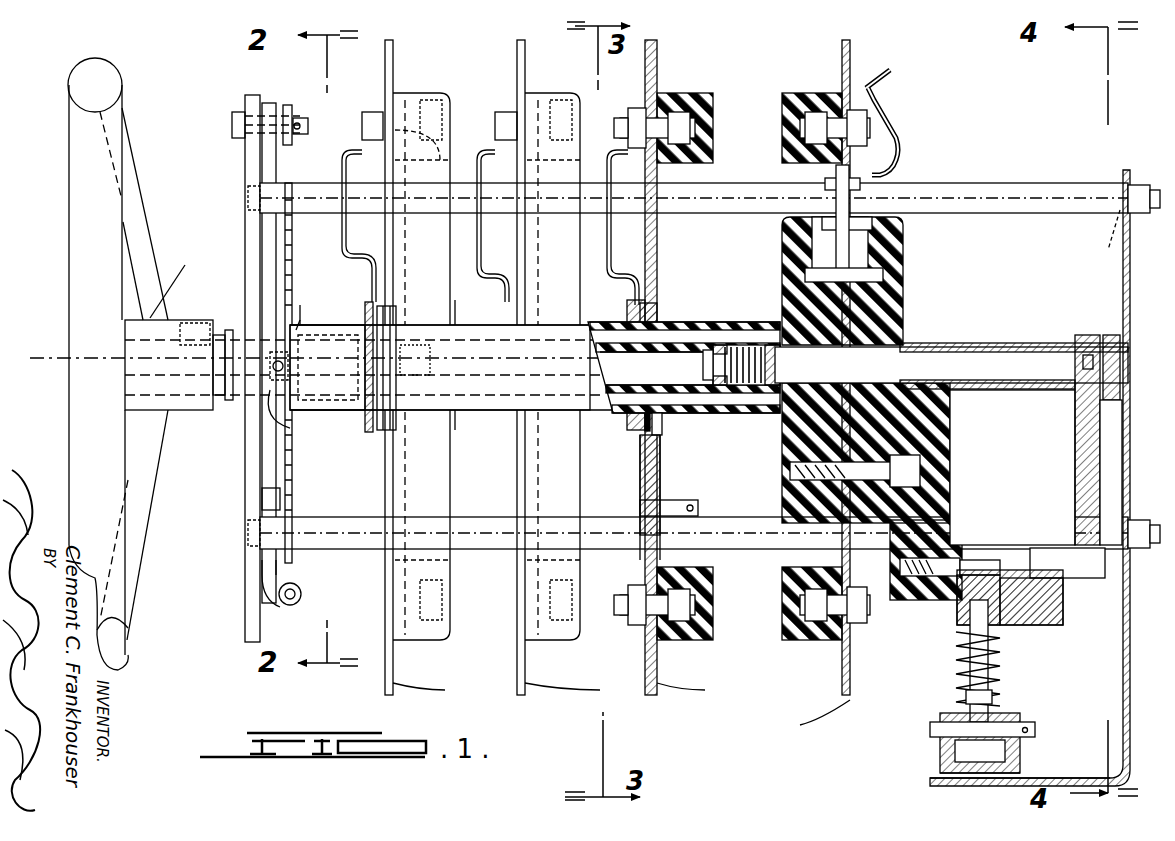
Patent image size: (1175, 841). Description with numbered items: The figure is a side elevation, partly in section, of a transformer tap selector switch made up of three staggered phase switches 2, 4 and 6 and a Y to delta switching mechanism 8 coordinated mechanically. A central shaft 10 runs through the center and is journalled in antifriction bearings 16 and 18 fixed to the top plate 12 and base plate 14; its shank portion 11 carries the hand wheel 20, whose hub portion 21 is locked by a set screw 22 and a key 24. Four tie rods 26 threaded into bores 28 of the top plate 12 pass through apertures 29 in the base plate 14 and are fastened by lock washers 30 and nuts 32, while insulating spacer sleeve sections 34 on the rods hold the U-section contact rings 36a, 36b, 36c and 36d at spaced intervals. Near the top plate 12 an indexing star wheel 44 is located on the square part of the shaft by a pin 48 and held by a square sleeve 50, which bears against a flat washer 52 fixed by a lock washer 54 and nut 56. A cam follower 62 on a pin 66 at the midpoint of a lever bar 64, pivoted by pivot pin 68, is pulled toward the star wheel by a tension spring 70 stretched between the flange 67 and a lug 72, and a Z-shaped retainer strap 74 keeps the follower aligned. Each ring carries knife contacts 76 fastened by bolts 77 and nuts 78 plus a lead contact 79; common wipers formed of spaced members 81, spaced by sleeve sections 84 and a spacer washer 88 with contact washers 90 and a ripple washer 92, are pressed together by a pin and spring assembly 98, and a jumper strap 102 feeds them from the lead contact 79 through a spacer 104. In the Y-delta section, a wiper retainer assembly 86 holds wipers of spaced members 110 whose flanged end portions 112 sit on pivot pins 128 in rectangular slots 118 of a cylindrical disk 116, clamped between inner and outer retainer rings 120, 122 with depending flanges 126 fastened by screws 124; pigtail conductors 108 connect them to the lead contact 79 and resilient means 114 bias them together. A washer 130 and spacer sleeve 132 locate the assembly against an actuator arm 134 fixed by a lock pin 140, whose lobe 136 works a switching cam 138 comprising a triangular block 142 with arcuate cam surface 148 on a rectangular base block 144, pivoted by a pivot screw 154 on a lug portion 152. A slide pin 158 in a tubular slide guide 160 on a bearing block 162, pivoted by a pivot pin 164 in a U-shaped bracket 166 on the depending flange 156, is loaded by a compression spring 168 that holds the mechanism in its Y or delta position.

The phase switch 2 is at (435, 90).
The phase switch 4 is at (548, 92).
The phase switch 6 is at (700, 92).
The Y to delta switching mechanism 8 is at (812, 92).
The central shaft 10 is at (950, 346).
The shank portion 11 is at (154, 367).
The top plate 12 is at (250, 462).
The base plate 14 is at (1122, 440).
The antifriction bearing 16 is at (240, 405).
The antifriction bearing 18 is at (1122, 360).
The hand wheel 20 is at (66, 210).
The hub portion 21 is at (176, 282).
The set screw 22 is at (192, 322).
The key 24 is at (125, 420).
The tie rods 26 is at (300, 270).
The threaded bores 28 is at (248, 186).
The apertures 29 is at (1140, 520).
The lock washers 30 is at (1132, 184).
The nuts 32 is at (1150, 190).
The spacer sleeve sections 34 is at (320, 182).
The contact ring 36a is at (422, 640).
The contact ring 36b is at (548, 640).
The contact ring 36c is at (688, 640).
The contact ring 36d is at (840, 640).
The star wheel 44 is at (292, 460).
The pin 48 is at (296, 320).
The square sleeve 50 is at (615, 335).
The flat washer 52 is at (730, 320).
The lock washer 54 is at (748, 325).
The nut 56 is at (951, 365).
The cam follower 62 is at (294, 426).
The lever bar 64 is at (272, 175).
The pin 66 is at (308, 370).
The flange 67 is at (300, 600).
The pivot pin 68 is at (305, 118).
The tension spring 70 is at (275, 618).
The lug 72 is at (280, 594).
The retainer strap 74 is at (282, 498).
The knife contacts 76 is at (621, 701).
The bolts 77 is at (690, 130).
The nuts 78 is at (638, 108).
The lead contact 79 is at (385, 75).
The spaced members 81 is at (640, 520).
The spacer sleeve sections 84 is at (690, 285).
The wiper retainer assembly 86 is at (920, 344).
The spacer washer 88 is at (684, 367).
The contact washers 90 is at (660, 430).
The ripple washer 92 is at (668, 430).
The pin and compression spring assembly 98 is at (400, 360).
The jumper strap 102 is at (342, 257).
The spacer 104 is at (640, 318).
The pigtail conductors 108 is at (880, 108).
The spaced members 110 is at (785, 250).
The flanged end portion 112 is at (885, 270).
The resilient means 114 is at (870, 200).
The cylindrical disk 116 is at (905, 335).
The rectangular slots 118 is at (885, 280).
The inner retainer ring 120 is at (785, 237).
The outer retainer ring 122 is at (940, 430).
The screws 124 is at (922, 470).
The depending flange portion 126 is at (785, 262).
The pivot pin 128 is at (842, 281).
The washer 130 is at (872, 491).
The spacer sleeve 132 is at (1012, 330).
The actuator arm 134 is at (1075, 402).
The lobe 136 is at (1067, 563).
The switching cam 138 is at (1050, 628).
The lock pin 140 is at (1085, 357).
The triangular block 142 is at (1028, 626).
The rectangular base block 144 is at (1020, 598).
The arcuate cam surface 148 is at (1005, 556).
The lug portion 152 is at (885, 615).
The pivot screw 154 is at (968, 556).
The depending flange 156 is at (1050, 776).
The slide pin 158 is at (970, 650).
The tubular slide guide 160 is at (955, 672).
The bearing block 162 is at (940, 720).
The pivot pin 164 is at (935, 735).
The U-shaped bracket 166 is at (940, 758).
The compression spring 168 is at (955, 694).